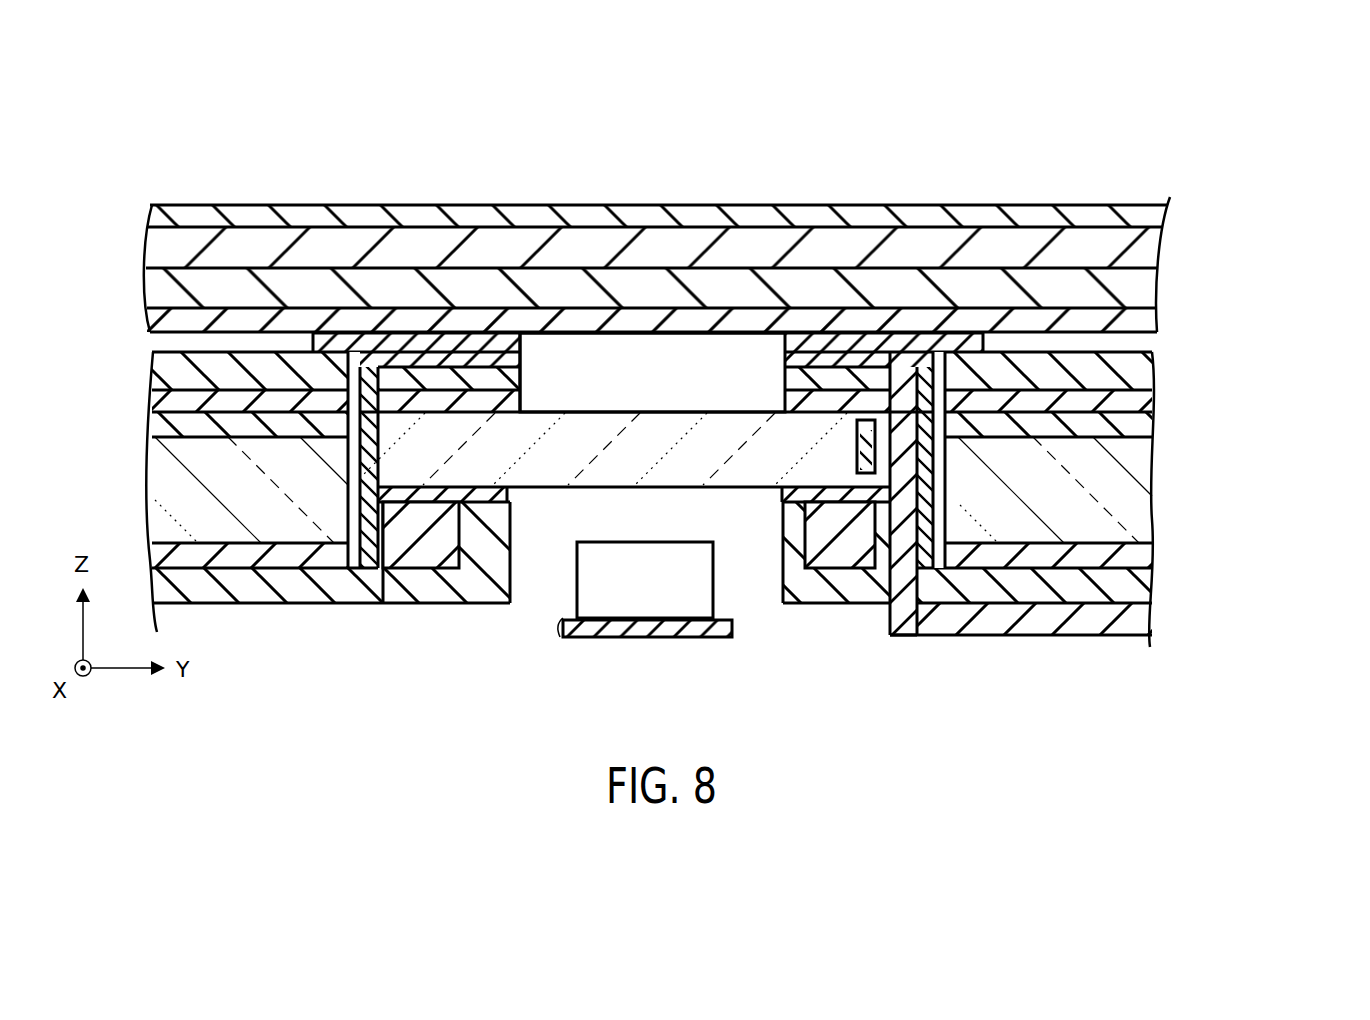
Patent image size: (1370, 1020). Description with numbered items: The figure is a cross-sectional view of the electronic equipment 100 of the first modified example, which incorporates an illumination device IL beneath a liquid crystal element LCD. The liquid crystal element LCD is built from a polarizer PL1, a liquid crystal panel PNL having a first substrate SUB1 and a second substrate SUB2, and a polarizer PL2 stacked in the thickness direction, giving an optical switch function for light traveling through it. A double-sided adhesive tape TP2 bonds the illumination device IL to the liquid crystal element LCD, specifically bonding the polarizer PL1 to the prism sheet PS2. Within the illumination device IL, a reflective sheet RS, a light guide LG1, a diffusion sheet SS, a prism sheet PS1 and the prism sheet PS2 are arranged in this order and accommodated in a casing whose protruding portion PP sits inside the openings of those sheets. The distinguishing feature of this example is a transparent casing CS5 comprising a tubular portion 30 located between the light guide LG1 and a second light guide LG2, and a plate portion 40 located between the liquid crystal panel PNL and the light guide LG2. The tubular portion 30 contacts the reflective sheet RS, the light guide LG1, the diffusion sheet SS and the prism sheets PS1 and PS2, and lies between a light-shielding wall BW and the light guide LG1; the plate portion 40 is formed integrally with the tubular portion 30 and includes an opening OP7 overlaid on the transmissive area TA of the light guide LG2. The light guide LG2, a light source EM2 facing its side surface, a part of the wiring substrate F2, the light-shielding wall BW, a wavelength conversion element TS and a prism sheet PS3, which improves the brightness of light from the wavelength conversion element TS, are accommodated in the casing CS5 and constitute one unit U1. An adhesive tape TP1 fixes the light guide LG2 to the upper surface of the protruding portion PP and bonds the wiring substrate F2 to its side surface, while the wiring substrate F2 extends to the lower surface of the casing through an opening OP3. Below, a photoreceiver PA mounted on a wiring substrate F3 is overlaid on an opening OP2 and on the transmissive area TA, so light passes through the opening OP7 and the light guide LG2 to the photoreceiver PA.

The electronic equipment 100 is at (1116, 106).
The liquid crystal element LCD is at (640, 266).
The liquid crystal panel PNL is at (1273, 263).
The polarizer PL2 is at (1158, 219).
The second substrate SUB2 is at (1156, 248).
The first substrate SUB1 is at (1150, 286).
The polarizer PL1 is at (1152, 320).
The plate portion 40 is at (422, 343).
The unit U1 is at (675, 342).
The adhesive tape TP2 is at (518, 349).
The opening OP7 is at (613, 345).
The prism sheet PS3 is at (508, 374).
The light guide LG2 is at (605, 409).
The transmissive area TA is at (669, 406).
The casing CS5 is at (790, 358).
The prism sheet PS2 is at (1150, 372).
The prism sheet PS1 is at (1152, 398).
The diffusion sheet SS is at (1152, 423).
The wavelength conversion element TS is at (525, 413).
The light source EM2 is at (855, 425).
The light guide LG1 is at (1150, 483).
The illumination device IL is at (702, 494).
The reflective sheet RS is at (1150, 552).
The wiring substrate F2 is at (1156, 620).
The tubular portion 30 is at (345, 518).
The light-shielding wall BW is at (370, 550).
The adhesive tape TP1 is at (438, 489).
The protruding portion PP is at (519, 522).
The opening OP2 is at (528, 578).
The wiring substrate F3 is at (655, 630).
The photoreceiver PA is at (733, 588).
The opening OP3 is at (904, 606).